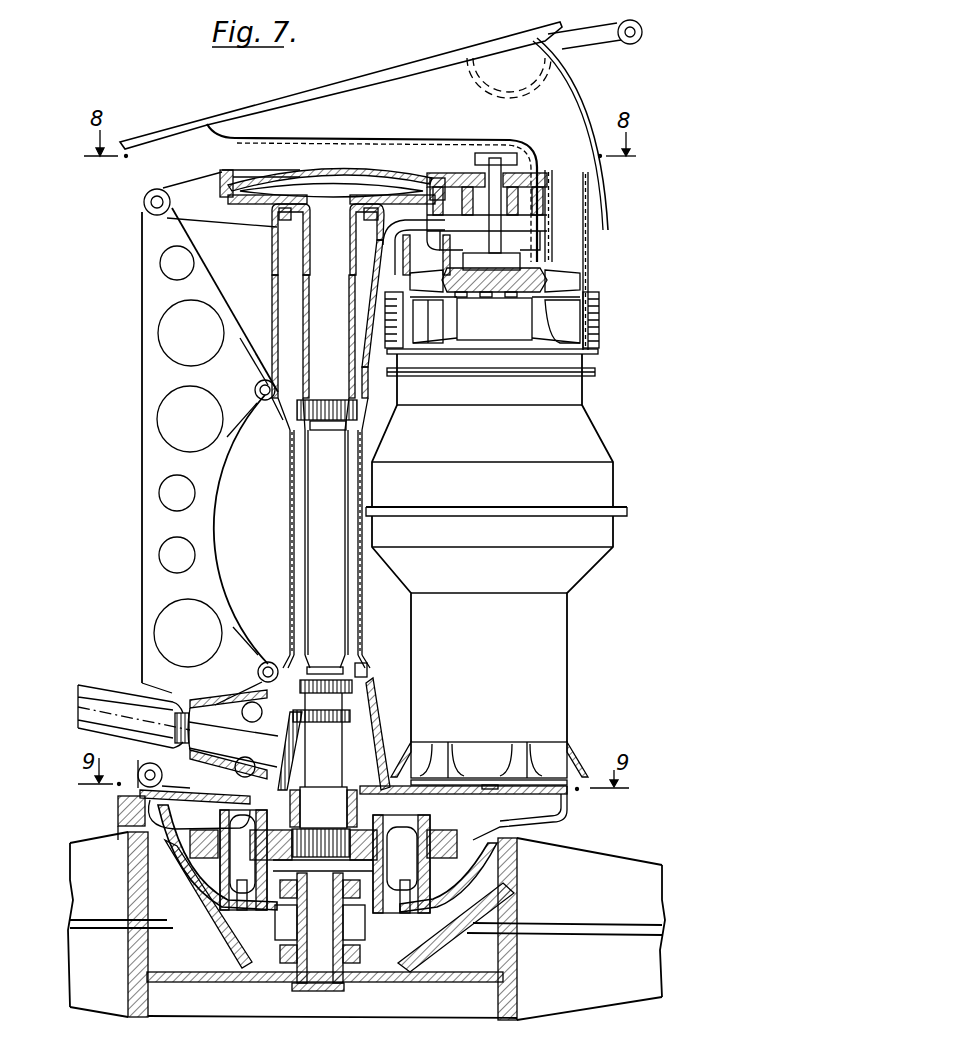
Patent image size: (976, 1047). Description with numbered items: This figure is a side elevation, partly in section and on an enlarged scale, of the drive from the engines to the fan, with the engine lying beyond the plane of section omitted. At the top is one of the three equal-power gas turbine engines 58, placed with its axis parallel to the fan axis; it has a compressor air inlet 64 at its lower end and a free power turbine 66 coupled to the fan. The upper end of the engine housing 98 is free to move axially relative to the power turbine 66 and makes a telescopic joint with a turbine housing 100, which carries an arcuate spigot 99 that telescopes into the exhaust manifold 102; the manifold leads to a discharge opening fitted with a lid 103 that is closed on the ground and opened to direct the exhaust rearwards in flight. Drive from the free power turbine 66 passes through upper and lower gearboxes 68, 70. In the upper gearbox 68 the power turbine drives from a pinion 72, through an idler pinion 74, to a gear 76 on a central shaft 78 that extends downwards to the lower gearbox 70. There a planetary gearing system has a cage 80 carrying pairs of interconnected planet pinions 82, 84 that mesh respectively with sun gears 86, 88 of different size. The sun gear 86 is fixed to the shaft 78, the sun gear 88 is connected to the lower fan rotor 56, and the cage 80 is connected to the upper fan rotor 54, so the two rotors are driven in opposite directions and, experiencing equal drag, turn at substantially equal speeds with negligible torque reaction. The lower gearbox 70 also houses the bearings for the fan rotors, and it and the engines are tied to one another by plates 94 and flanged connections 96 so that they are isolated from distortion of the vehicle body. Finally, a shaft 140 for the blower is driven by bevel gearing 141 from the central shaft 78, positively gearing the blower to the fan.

The upper fan rotor 54 is at (575, 862).
The lower fan rotor 56 is at (652, 998).
The gas turbine engine 58 is at (570, 716).
The compressor air inlet 64 is at (487, 752).
The free power turbine 66 is at (565, 278).
The upper gearbox 68 is at (263, 181).
The lower gearbox 70 is at (126, 807).
The pinion 72 is at (518, 195).
The idler pinion 74 is at (433, 183).
The gear 76 is at (383, 205).
The central shaft 78 is at (320, 495).
The cage 80 is at (352, 909).
The planet pinion 82 is at (445, 838).
The planet pinion 84 is at (440, 880).
The sun gear 86 is at (313, 782).
The sun gear 88 is at (401, 864).
The plate 94 is at (144, 424).
The flanged connection 96 is at (563, 796).
The engine housing 98 is at (583, 393).
The arcuate spigot 99 is at (588, 200).
The turbine housing 100 is at (584, 297).
The exhaust manifold 102 is at (587, 100).
The lid 103 is at (307, 78).
The shaft 140 is at (107, 705).
The bevel gearing 141 is at (299, 747).